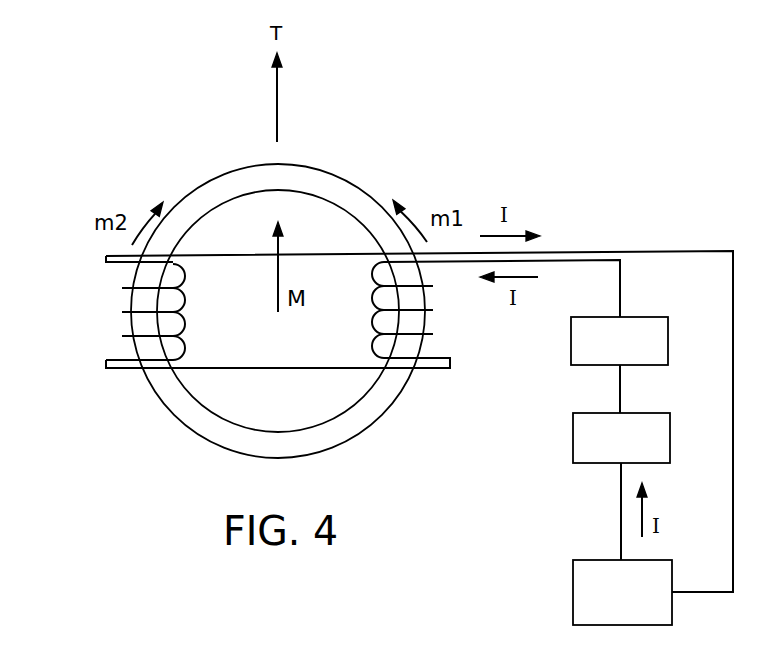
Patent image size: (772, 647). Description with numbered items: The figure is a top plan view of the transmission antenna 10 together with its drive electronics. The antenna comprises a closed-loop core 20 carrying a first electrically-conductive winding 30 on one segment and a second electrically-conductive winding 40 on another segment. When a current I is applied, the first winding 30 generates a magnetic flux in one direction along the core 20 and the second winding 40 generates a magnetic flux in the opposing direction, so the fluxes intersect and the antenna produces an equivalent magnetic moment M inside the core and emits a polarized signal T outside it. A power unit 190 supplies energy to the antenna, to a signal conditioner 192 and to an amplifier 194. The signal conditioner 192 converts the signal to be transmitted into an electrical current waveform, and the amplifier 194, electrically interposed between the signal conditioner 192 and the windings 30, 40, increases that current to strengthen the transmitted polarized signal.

The transmission antenna 10 is at (73, 162).
The closed-loop core 20 is at (342, 190).
The first electrically-conductive winding 30 is at (483, 352).
The second electrically-conductive winding 40 is at (78, 355).
The power unit 190 is at (573, 592).
The signal conditioner 192 is at (573, 447).
The amplifier 194 is at (655, 313).